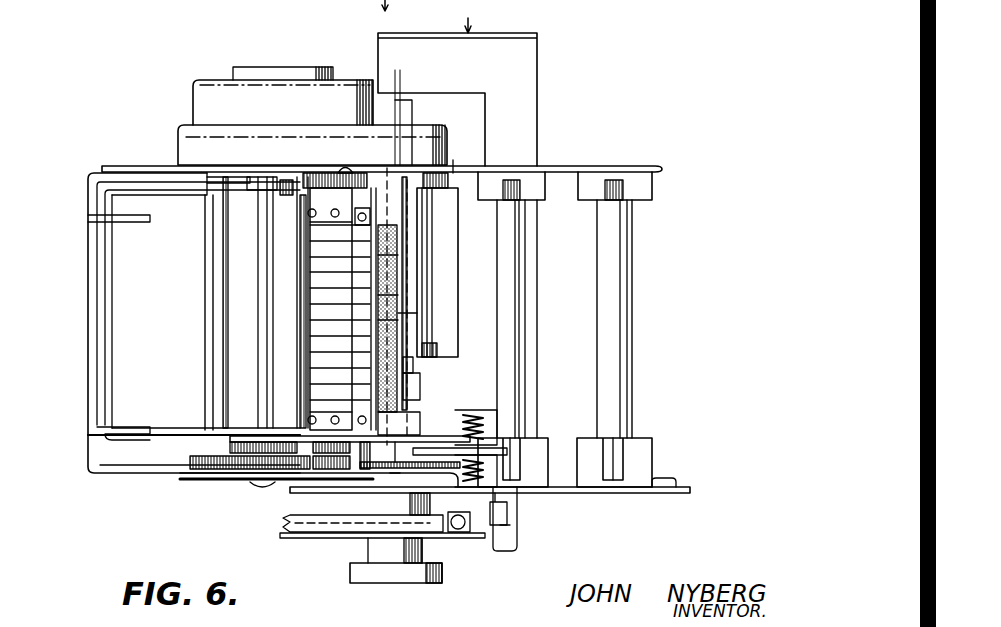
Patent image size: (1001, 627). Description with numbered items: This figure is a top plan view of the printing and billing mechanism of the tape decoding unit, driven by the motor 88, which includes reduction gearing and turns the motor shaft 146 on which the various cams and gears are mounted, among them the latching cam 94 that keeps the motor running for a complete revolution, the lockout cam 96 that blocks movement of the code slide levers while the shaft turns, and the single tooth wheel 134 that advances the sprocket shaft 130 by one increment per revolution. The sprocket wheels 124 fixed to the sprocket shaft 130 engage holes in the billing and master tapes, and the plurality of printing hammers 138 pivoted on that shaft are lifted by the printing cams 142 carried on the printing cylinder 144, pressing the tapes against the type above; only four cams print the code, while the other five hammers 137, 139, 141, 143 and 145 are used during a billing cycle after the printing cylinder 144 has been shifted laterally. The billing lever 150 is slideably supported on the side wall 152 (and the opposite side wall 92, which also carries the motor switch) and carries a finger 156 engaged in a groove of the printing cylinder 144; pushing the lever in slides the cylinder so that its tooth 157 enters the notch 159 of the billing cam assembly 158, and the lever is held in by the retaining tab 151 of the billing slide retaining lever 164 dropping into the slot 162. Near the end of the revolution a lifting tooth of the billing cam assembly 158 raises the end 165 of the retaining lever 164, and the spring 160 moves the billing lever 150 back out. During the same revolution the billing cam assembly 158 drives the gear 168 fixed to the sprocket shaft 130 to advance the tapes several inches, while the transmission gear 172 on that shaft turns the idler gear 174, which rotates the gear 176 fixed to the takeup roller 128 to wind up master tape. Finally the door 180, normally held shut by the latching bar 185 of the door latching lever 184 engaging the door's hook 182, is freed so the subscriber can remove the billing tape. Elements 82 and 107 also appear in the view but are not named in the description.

The base plate 82 is at (315, 539).
The motor 88 is at (181, 118).
The side wall 92 is at (657, 478).
The latching cam 94 is at (379, 573).
The lockout cam 96 is at (346, 507).
The bearing 107 is at (474, 540).
The sprocket wheel 124 is at (325, 195).
The takeup roller 128 is at (203, 323).
The sprocket shaft 130 is at (395, 473).
The single tooth wheel 134 is at (418, 172).
The printing hammer 137 is at (390, 237).
The printing hammers 138 is at (421, 287).
The printing hammer 139 is at (399, 256).
The printing hammer 141 is at (399, 295).
The printing cams 142 is at (350, 282).
The printing hammer 143 is at (399, 321).
The printing cylinder 144 is at (412, 313).
The printing hammer 145 is at (400, 402).
The motor shaft 146 is at (422, 241).
The billing lever 150 is at (530, 137).
The retaining tab 151 is at (506, 548).
The side wall 152 is at (574, 190).
The finger 156 is at (443, 357).
The tooth 157 is at (418, 393).
The billing cam assembly 158 is at (437, 428).
The notch 159 is at (415, 410).
The spring 160 is at (470, 427).
The slot 162 is at (507, 506).
The billing slide retaining lever 164 is at (578, 494).
The end of the billing slide retaining lever 165 is at (393, 468).
The gear 168 is at (320, 470).
The transmission gear 172 is at (332, 436).
The idler gear 174 is at (229, 448).
The gear 176 is at (196, 464).
The door 180 is at (87, 200).
The hook 182 is at (133, 220).
The door latching lever 184 is at (165, 430).
The latching bar 185 is at (107, 270).